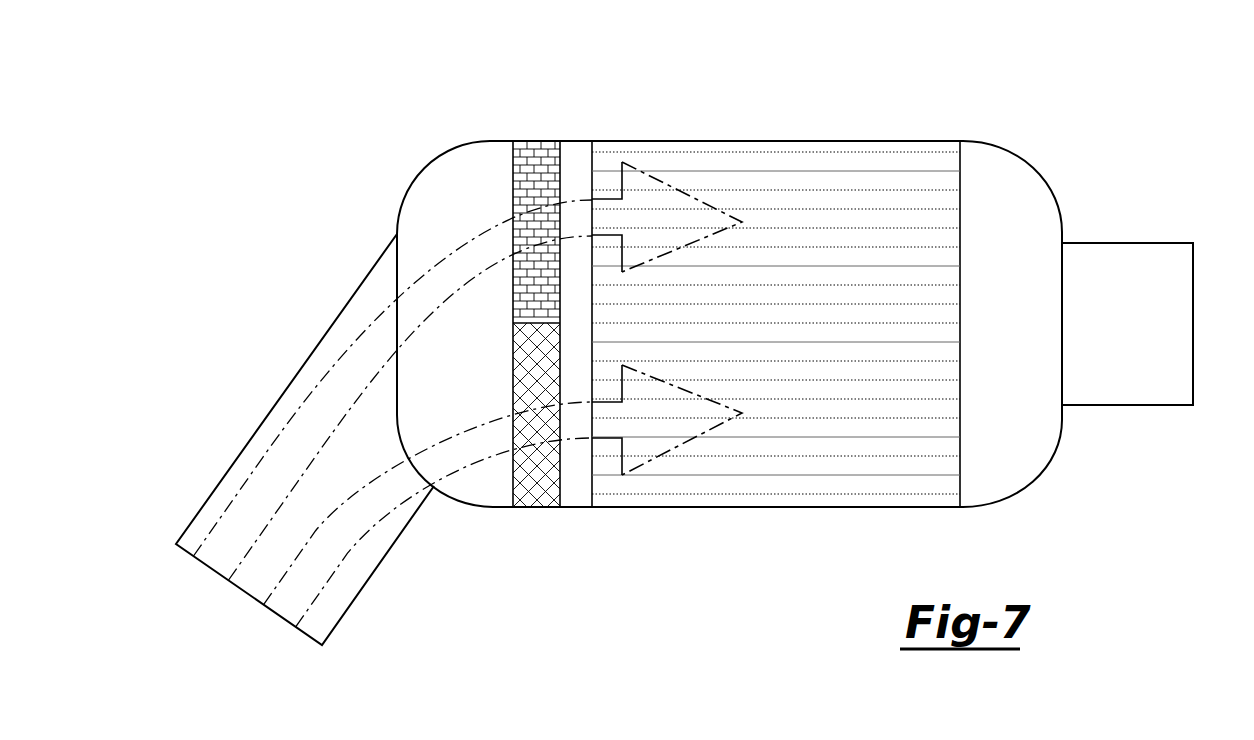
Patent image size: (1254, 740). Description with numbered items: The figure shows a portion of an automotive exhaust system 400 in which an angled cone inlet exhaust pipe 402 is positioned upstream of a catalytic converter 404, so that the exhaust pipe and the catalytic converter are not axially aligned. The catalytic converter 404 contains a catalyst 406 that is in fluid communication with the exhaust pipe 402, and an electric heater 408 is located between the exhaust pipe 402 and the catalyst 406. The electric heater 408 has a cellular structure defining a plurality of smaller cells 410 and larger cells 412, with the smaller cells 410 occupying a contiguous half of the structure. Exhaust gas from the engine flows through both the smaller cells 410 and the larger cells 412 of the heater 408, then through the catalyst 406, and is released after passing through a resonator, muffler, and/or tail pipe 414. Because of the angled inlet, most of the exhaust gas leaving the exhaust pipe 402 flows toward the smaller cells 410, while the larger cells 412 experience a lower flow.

The automotive exhaust system 400 is at (1085, 98).
The angled cone inlet exhaust pipe 402 is at (288, 385).
The catalytic converter 404 is at (767, 140).
The catalyst 406 is at (870, 182).
The electric heater 408 is at (512, 322).
The smaller cells 410 is at (542, 170).
The larger cells 412 is at (540, 480).
The resonator, muffler, and/or tail pipe 414 is at (1122, 280).